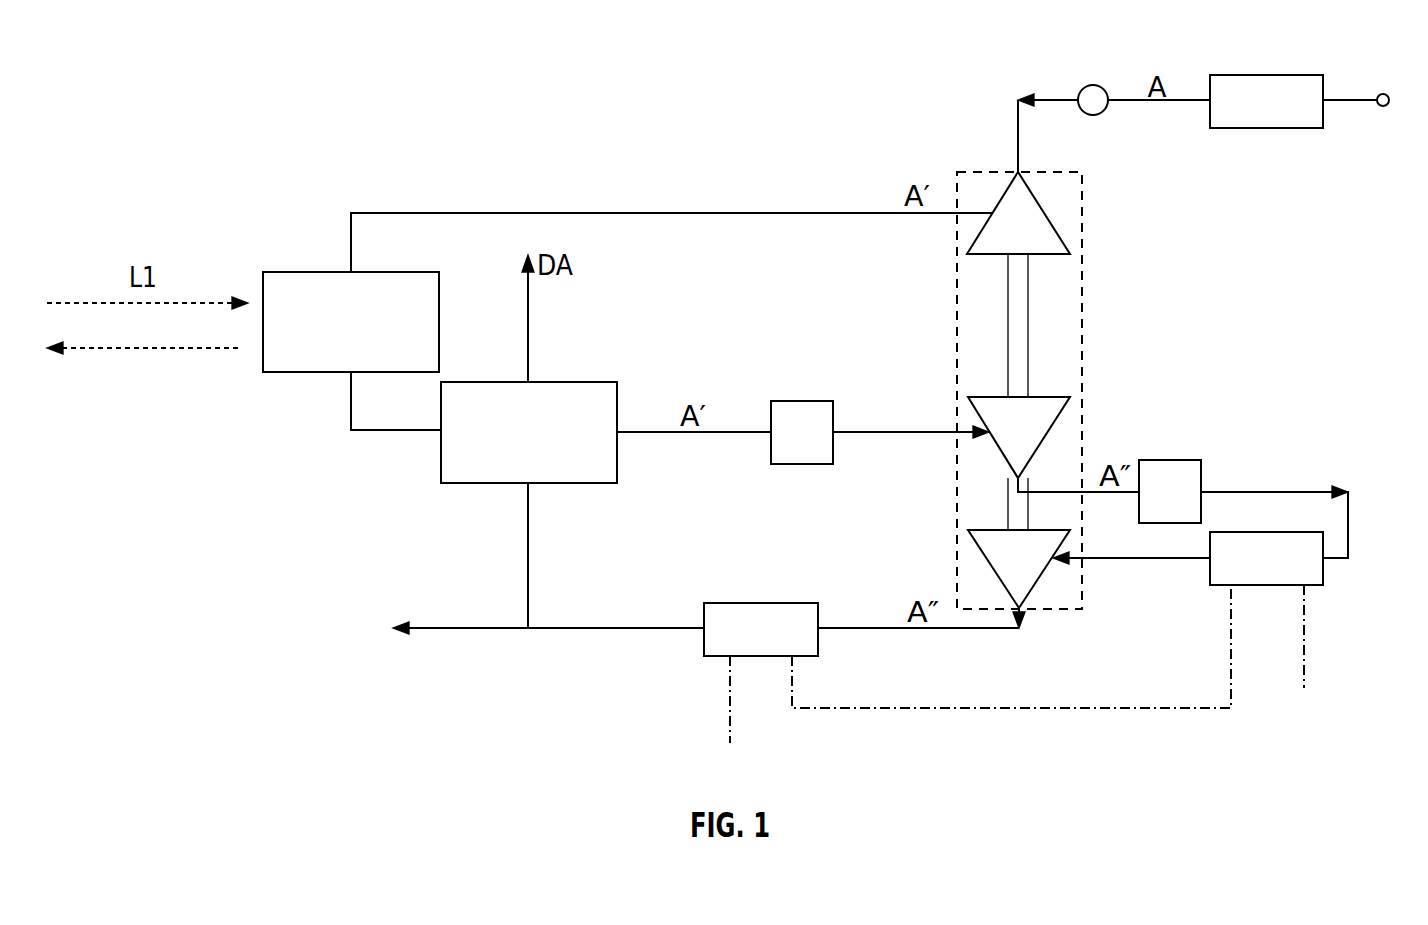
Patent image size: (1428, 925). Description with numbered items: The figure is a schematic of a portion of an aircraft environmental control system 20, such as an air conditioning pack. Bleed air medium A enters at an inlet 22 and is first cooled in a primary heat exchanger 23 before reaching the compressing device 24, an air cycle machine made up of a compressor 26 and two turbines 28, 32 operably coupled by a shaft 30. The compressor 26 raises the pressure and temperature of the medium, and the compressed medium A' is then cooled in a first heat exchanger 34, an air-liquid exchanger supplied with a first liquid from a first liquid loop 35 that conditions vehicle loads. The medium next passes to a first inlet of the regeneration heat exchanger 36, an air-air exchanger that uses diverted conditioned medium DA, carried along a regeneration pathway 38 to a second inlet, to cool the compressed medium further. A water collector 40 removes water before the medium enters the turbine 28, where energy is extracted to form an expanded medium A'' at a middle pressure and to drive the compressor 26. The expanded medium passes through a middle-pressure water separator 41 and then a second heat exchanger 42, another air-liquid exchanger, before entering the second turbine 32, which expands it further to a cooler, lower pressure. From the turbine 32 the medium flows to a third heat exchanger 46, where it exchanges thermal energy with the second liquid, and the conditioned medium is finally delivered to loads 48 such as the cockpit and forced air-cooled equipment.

The environmental control system 20 is at (246, 72).
The inlet 22 is at (1386, 95).
The primary heat exchanger 23 is at (1278, 74).
The compressing device 24 is at (1085, 152).
The compressor 26 is at (1040, 227).
The turbine 28 is at (987, 408).
The shaft 30 is at (1018, 323).
The turbine 32 is at (990, 543).
The first heat exchanger 34 is at (330, 271).
The first liquid loop 35 is at (211, 375).
The regeneration heat exchanger 36 is at (518, 381).
The regeneration pathway 38 is at (528, 555).
The water collector 40 is at (802, 400).
The middle-pressure water separator 41 is at (1170, 459).
The second heat exchanger 42 is at (1280, 531).
The third heat exchanger 46 is at (773, 602).
The loads 48 is at (450, 632).